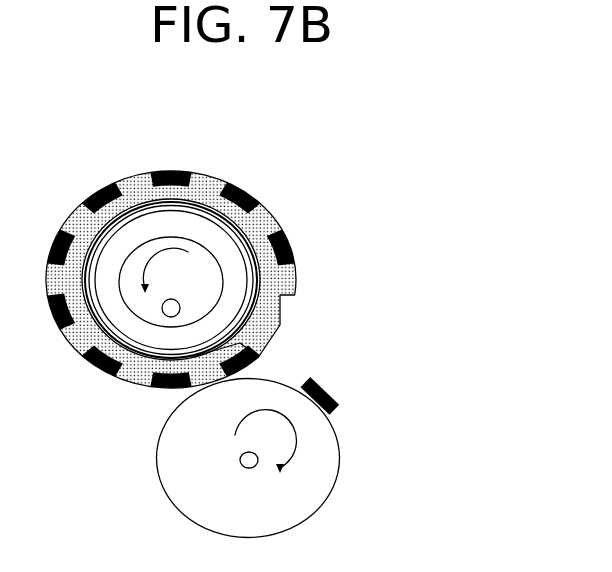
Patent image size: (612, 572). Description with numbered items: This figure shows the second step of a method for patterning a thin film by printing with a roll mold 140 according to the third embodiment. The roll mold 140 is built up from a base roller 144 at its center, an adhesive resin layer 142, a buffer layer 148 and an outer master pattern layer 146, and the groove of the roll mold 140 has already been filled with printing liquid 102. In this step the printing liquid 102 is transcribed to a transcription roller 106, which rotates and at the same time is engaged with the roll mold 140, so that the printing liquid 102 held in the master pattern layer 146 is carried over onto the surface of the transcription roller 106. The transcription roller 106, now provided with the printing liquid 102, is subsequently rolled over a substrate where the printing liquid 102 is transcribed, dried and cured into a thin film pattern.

The printing liquid 102 is at (99, 191).
The transcription roller 106 is at (320, 458).
The roll mold 140 is at (256, 275).
The adhesive resin layer 142 is at (242, 231).
The base roller 144 is at (243, 284).
The master pattern layer 146 is at (288, 272).
The buffer layer 148 is at (258, 285).